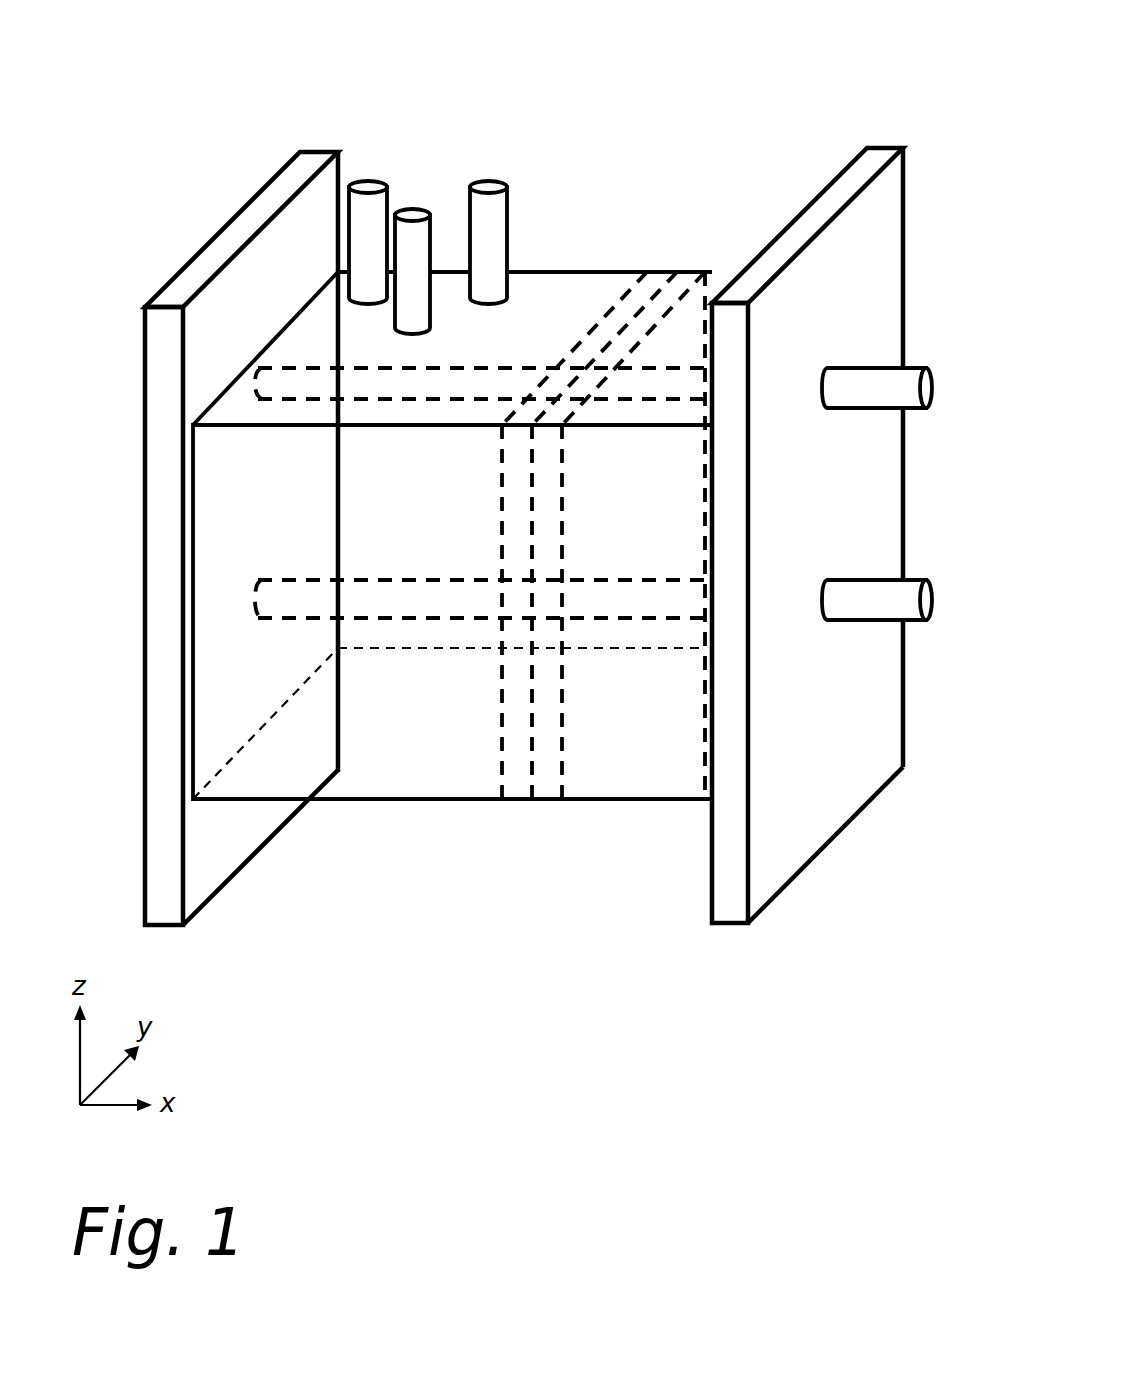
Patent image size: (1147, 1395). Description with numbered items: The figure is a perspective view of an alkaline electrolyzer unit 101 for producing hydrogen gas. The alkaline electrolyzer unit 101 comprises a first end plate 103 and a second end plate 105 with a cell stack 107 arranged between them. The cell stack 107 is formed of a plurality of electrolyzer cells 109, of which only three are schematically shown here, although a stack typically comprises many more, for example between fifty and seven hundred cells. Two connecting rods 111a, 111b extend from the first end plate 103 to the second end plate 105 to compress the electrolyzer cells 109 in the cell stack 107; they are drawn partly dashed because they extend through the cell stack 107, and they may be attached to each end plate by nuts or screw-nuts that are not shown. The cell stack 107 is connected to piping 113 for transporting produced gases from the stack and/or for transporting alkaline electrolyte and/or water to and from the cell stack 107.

The alkaline electrolyzer unit 101 is at (158, 116).
The first end plate 103 is at (185, 285).
The second end plate 105 is at (878, 163).
The cell stack 107 is at (548, 283).
The electrolyzer cells 109 is at (521, 838).
The connecting rod 111a is at (876, 373).
The connecting rod 111b is at (878, 590).
The piping 113 is at (497, 152).